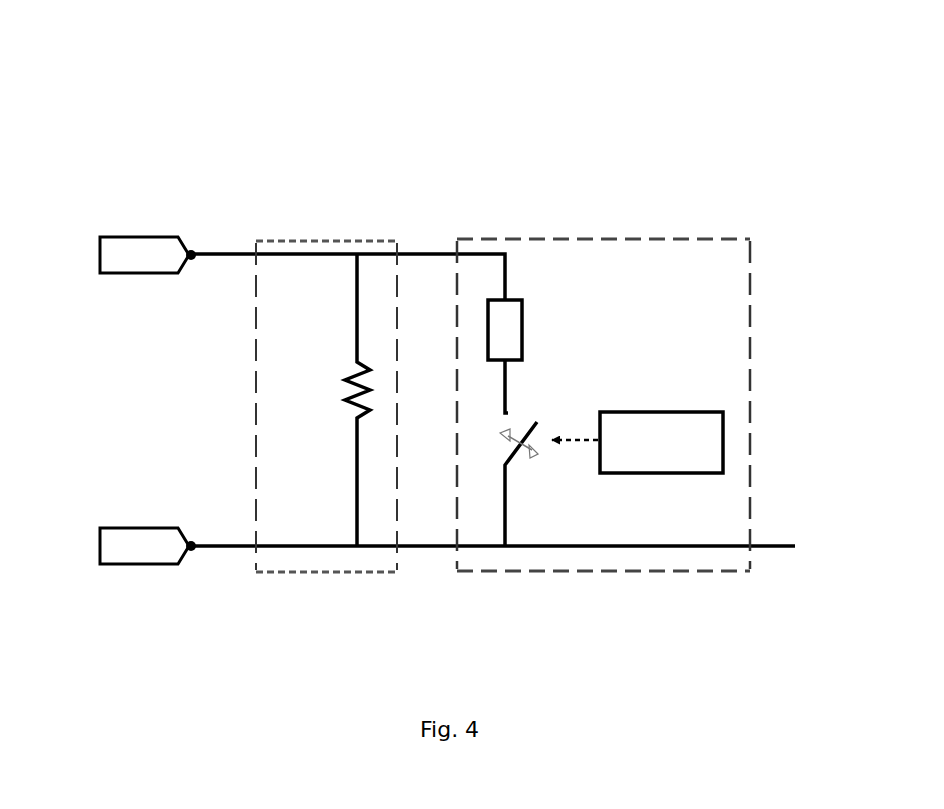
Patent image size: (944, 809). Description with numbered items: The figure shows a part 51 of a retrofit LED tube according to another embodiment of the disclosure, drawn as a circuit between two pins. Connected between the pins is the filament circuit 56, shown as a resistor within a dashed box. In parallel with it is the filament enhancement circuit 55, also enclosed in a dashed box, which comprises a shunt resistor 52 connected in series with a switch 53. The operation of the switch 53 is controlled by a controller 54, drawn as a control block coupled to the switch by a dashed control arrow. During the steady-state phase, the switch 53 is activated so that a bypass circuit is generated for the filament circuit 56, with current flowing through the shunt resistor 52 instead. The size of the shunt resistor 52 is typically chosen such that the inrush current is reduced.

The part of a retrofit LED tube 51 is at (580, 124).
The shunt resistor 52 is at (526, 316).
The switch 53 is at (520, 475).
The controller 54 is at (677, 478).
The filament enhancement circuit 55 is at (632, 576).
The filament circuit 56 is at (304, 236).